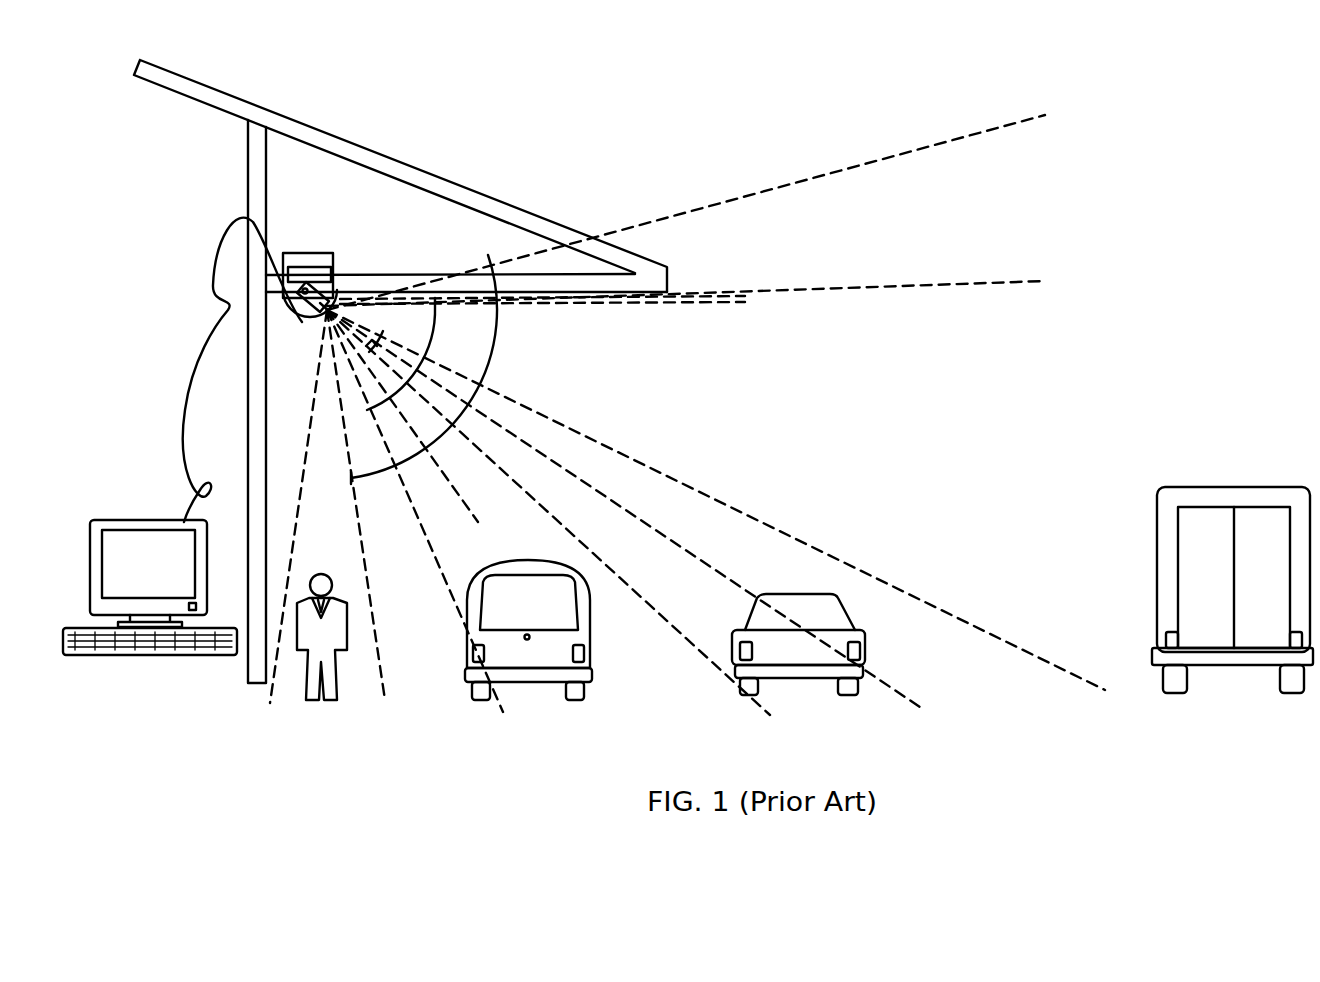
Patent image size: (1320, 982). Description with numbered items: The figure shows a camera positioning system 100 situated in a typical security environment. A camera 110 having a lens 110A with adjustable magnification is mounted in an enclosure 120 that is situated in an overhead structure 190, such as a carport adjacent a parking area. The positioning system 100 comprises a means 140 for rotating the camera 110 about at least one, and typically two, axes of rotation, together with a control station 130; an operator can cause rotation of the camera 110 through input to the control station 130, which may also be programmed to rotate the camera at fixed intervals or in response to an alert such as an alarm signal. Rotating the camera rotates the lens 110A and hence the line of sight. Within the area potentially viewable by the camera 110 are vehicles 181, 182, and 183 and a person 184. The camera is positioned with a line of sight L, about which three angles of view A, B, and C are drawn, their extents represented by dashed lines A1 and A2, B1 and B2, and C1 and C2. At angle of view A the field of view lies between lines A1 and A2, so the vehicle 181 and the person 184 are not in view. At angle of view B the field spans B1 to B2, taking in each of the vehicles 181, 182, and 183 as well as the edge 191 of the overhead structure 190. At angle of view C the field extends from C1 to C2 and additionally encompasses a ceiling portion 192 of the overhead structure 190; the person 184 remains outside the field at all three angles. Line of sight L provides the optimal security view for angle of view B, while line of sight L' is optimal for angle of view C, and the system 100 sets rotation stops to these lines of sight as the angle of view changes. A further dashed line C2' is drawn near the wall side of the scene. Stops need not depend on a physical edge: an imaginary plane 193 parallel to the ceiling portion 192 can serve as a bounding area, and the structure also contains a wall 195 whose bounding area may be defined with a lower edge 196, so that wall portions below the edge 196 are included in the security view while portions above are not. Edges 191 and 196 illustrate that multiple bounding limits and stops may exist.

The camera positioning system 100 is at (228, 230).
The camera 110 is at (298, 315).
The lens 110A is at (336, 300).
The enclosure 120 is at (331, 262).
The control station 130 is at (155, 518).
The means for rotating the camera 140 is at (314, 253).
The vehicle 181 is at (586, 635).
The vehicle 182 is at (866, 636).
The vehicle 183 is at (1157, 592).
The person 184 is at (339, 655).
The overhead structure 190 is at (492, 262).
The edge of the overhead structure 191 is at (670, 291).
The ceiling portion 192 is at (520, 300).
The imaginary plane 193 is at (712, 307).
The wall 195 is at (253, 463).
The lower edge 196 is at (268, 548).
The angle of view A is at (385, 340).
The angle of view B is at (436, 320).
The angle of view C is at (494, 352).
The extent line of angle of view A A1 is at (716, 500).
The extent line of angle of view B B1 is at (686, 291).
The extent line of angle of view C C1 is at (686, 212).
The extent line of angle of view A A2 is at (548, 512).
The extent line of angle of view B B2 is at (415, 511).
The extent line of angle of view C C2 is at (356, 505).
The ray C2' is at (298, 520).
The line of sight L is at (623, 508).
The line of sight L' is at (402, 416).